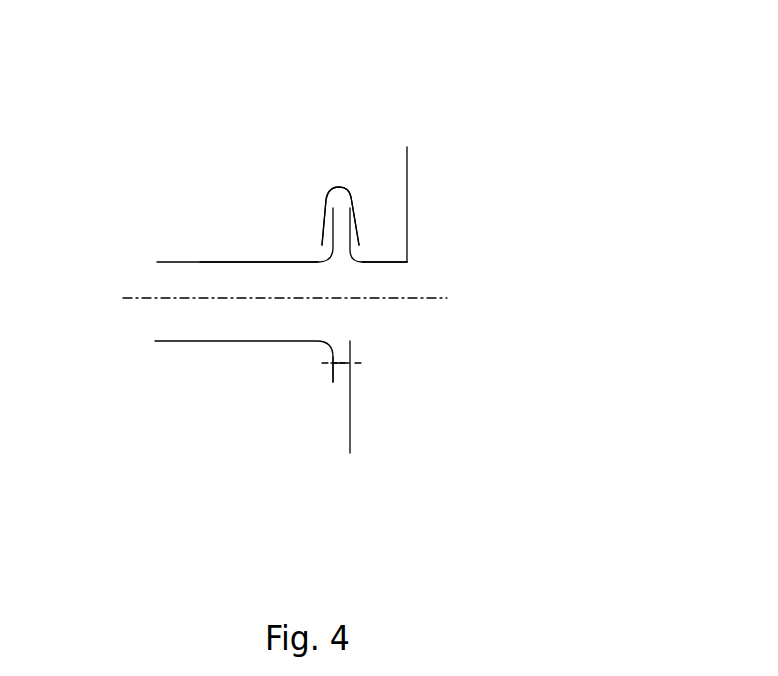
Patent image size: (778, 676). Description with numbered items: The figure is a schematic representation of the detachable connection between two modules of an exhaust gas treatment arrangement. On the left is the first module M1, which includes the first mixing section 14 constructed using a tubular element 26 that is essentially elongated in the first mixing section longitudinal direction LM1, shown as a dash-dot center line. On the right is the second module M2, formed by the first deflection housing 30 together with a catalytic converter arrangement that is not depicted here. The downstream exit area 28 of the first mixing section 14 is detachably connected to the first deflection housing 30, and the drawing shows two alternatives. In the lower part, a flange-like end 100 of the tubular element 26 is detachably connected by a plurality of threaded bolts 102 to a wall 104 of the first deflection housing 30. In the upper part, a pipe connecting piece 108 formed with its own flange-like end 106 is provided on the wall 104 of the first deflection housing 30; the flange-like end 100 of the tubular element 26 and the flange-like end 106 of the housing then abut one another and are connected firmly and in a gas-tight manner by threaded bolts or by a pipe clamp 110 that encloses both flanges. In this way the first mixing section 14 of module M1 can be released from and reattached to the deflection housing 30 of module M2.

The first mixing section 14 is at (152, 162).
The tubular element 26 is at (138, 393).
The downstream exit area 28 is at (292, 260).
The first deflection housing 30 is at (533, 242).
The flange-like end 100 is at (285, 413).
The threaded bolts 102 is at (402, 380).
The wall 104 is at (457, 145).
The flange-like end 106 is at (457, 200).
The pipe connecting piece 108 is at (457, 280).
The pipe clamp 110 is at (362, 157).
The first module M1 is at (138, 475).
The second module M2 is at (622, 87).
The first mixing section longitudinal direction LM1 is at (78, 335).